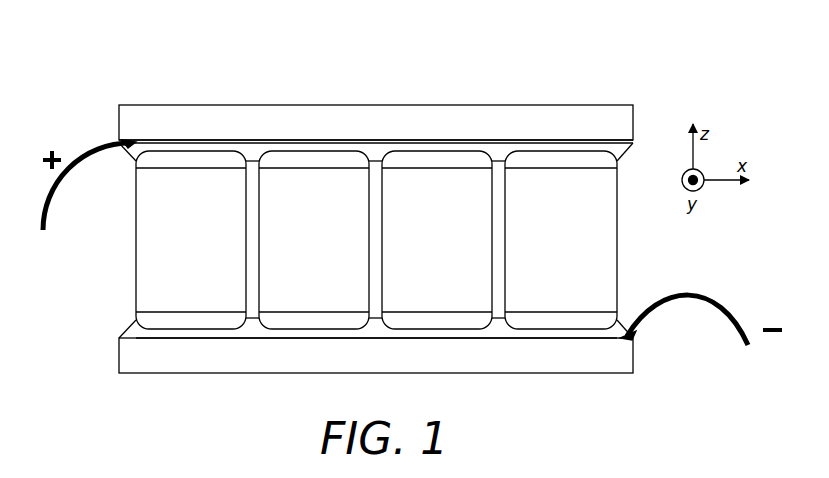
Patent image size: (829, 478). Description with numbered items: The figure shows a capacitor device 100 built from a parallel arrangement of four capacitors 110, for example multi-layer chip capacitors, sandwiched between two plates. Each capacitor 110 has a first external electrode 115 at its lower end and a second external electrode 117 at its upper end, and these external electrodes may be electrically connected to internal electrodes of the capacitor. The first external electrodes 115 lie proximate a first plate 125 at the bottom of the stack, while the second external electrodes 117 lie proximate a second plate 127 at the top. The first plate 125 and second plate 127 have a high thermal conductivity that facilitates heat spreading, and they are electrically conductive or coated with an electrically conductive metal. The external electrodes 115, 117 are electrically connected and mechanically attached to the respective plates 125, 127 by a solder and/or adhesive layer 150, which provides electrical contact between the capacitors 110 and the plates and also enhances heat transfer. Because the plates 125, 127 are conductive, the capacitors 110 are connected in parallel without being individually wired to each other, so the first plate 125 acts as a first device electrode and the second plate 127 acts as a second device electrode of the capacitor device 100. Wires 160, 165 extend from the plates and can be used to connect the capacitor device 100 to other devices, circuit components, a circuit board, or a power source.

The capacitor device 100 is at (147, 65).
The second plate 127 is at (272, 104).
The first plate 125 is at (119, 357).
The capacitor 110 is at (606, 241).
The second external electrode 117 is at (604, 158).
The first external electrode 115 is at (147, 320).
The solder and/or adhesive layer 150 is at (375, 141).
The wire 160 is at (54, 195).
The wire 165 is at (715, 293).